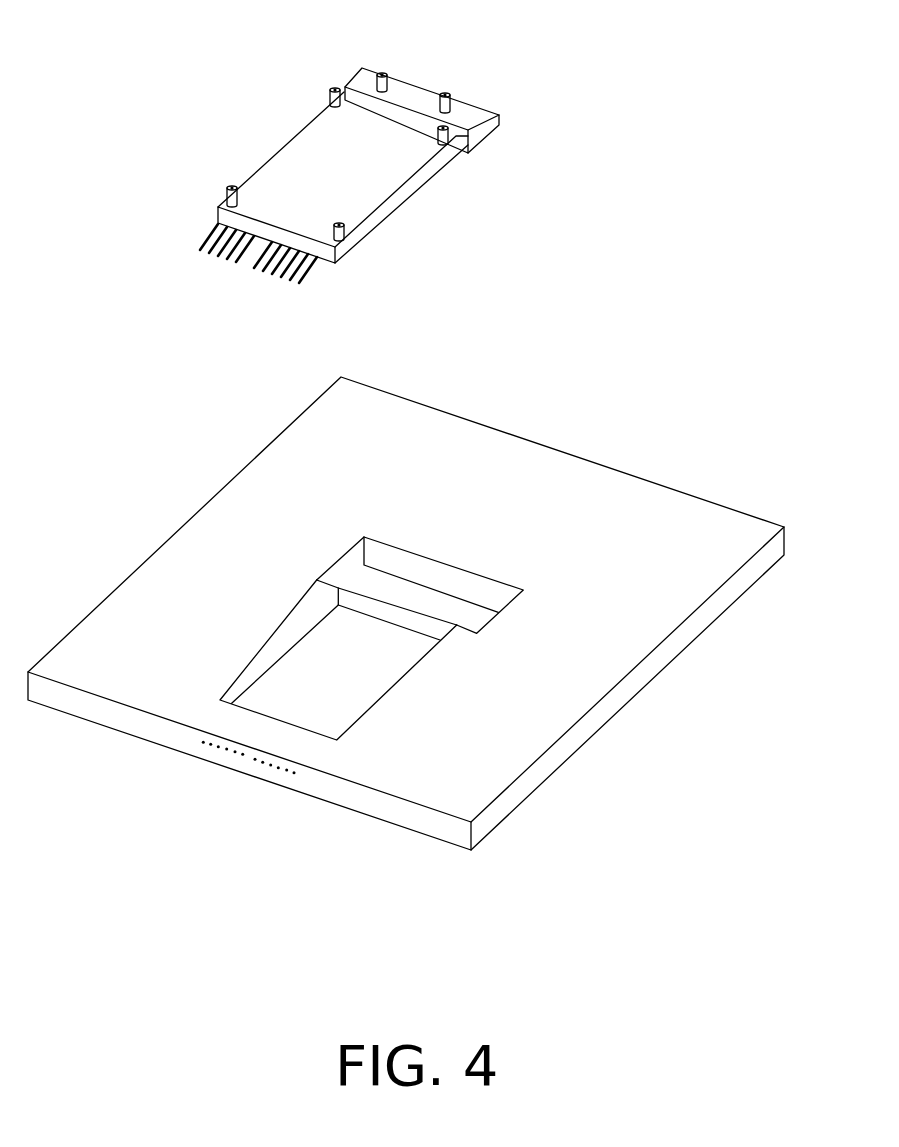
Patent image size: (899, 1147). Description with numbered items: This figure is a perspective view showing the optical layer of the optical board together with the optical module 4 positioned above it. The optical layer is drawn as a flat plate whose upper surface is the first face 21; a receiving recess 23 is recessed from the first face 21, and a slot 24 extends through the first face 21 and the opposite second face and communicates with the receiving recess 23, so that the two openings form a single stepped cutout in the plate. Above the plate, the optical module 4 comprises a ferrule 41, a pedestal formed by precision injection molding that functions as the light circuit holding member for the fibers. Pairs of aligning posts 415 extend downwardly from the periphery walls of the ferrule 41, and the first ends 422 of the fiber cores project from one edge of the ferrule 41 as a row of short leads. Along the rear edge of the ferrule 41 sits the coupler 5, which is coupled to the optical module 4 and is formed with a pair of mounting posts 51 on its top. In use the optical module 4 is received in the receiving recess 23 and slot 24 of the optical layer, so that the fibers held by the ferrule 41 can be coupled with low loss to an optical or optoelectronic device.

The optical module 4 is at (310, 137).
The ferrule 41 is at (385, 180).
The aligning posts 415 is at (232, 186).
The first end 422 is at (307, 270).
The coupler 5 is at (486, 130).
The mounting posts 51 is at (447, 94).
The first face 21 is at (688, 518).
The receiving recess 23 is at (305, 705).
The slot 24 is at (458, 613).